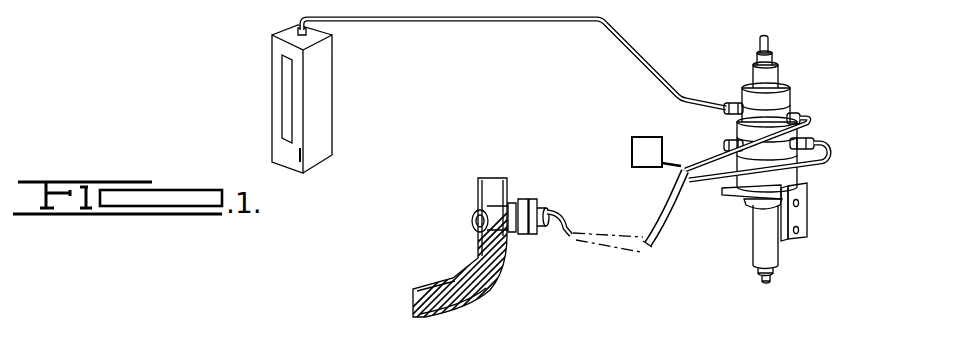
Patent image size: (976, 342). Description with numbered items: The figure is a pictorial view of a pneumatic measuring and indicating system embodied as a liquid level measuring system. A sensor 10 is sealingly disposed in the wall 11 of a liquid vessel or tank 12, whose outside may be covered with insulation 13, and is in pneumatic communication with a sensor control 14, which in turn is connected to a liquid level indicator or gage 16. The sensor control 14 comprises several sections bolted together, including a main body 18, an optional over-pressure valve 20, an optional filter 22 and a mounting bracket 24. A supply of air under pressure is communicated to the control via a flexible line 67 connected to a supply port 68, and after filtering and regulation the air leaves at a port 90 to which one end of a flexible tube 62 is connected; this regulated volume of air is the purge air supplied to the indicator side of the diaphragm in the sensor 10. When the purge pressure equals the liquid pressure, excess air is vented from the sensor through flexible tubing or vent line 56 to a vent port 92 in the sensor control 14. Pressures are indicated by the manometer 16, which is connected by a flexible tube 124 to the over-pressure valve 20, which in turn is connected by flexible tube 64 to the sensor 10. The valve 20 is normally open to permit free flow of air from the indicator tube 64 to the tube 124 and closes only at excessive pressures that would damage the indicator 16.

The sensor 10 is at (529, 228).
The wall 11 is at (460, 277).
The tank 12 is at (488, 295).
The insulation 13 is at (492, 182).
The sensor control 14 is at (818, 114).
The liquid level indicator 16 is at (340, 82).
The main body 18 is at (803, 167).
The over-pressure valve 20 is at (770, 78).
The filter 22 is at (757, 245).
The mounting bracket 24 is at (798, 217).
The vent line 56 is at (683, 138).
The flexible tube 62 is at (824, 153).
The flexible tube 64 is at (807, 122).
The flexible line 67 is at (667, 177).
The supply port 68 is at (723, 182).
The port 90 is at (822, 124).
The vent port 92 is at (728, 142).
The flexible tube 124 is at (533, 22).